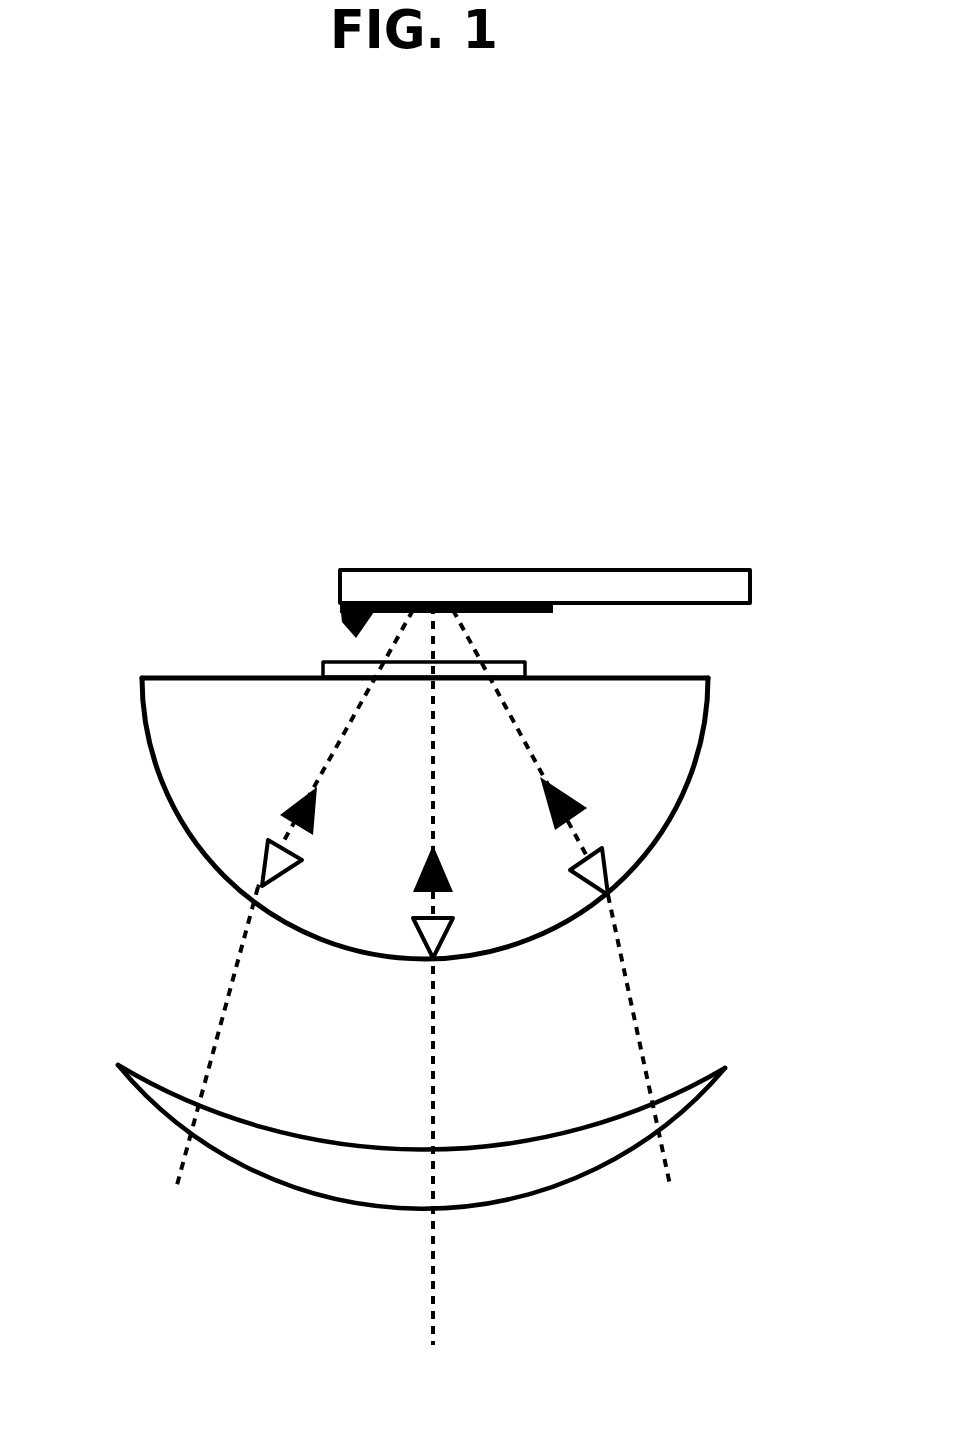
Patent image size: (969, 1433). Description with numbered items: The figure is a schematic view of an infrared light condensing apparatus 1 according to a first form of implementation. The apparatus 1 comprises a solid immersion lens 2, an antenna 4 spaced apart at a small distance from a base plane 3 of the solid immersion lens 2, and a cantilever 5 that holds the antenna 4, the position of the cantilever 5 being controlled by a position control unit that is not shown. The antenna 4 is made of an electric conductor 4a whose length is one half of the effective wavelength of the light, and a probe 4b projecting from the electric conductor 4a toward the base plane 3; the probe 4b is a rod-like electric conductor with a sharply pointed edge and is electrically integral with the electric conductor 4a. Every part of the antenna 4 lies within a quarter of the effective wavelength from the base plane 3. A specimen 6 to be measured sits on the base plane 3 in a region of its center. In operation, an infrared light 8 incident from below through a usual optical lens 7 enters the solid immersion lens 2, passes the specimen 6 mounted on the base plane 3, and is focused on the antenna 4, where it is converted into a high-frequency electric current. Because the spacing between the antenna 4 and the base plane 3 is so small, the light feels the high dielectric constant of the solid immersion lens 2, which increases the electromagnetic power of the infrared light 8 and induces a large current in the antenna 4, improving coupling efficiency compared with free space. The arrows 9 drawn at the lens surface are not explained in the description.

The infrared light condensing apparatus 1 is at (145, 380).
The solid immersion lens 2 is at (637, 808).
The base plane 3 is at (648, 676).
The antenna 4 is at (483, 600).
The electric conductor 4a is at (527, 613).
The probe 4b is at (343, 640).
The cantilever 5 is at (583, 585).
The specimen 6 is at (320, 668).
The optical lens 7 is at (567, 1160).
The infrared light 8 is at (280, 815).
The emitted light arrows 9 is at (267, 877).